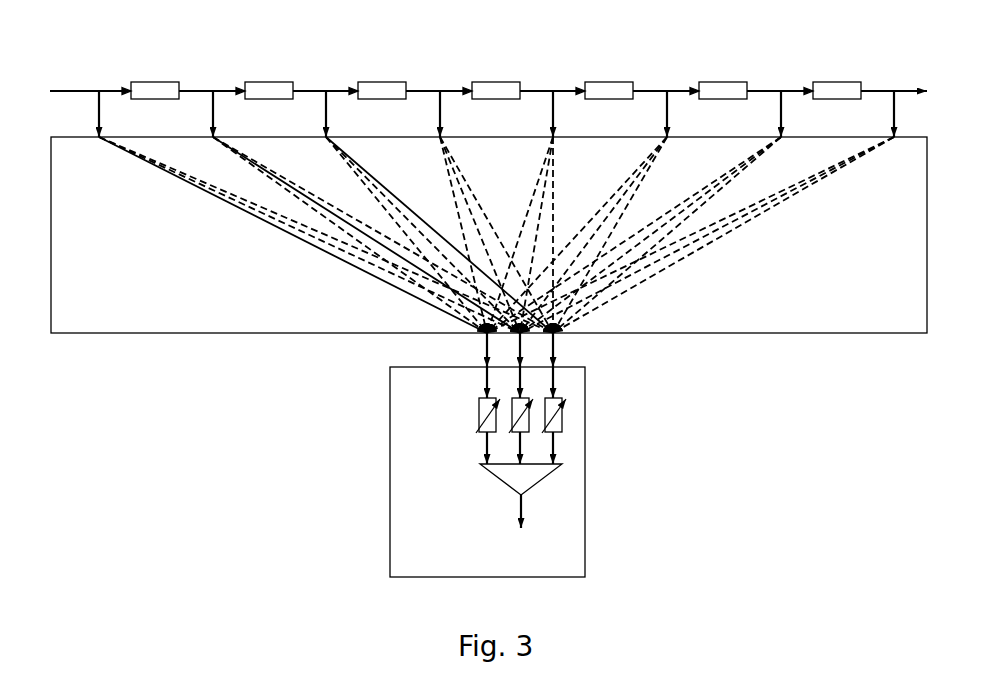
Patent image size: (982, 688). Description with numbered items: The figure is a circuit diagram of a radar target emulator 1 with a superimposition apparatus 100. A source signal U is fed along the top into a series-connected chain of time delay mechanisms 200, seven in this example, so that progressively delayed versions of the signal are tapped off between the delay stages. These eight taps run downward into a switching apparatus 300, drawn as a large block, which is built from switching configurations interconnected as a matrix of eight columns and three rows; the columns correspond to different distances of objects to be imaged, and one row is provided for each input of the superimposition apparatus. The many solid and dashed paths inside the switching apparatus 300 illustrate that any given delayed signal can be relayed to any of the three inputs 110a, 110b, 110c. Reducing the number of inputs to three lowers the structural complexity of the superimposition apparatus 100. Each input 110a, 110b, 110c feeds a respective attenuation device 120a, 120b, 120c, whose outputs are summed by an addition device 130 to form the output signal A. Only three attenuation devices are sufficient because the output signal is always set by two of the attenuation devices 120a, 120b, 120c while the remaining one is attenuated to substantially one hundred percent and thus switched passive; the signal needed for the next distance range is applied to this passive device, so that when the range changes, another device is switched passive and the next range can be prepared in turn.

The radar target emulator 1 is at (914, 36).
The time delay mechanism 200 is at (142, 82).
The switching apparatus 300 is at (857, 333).
The superimposition apparatus 100 is at (390, 558).
The first input 110a is at (485, 363).
The second input 110b is at (528, 364).
The third input 110c is at (557, 363).
The first attenuation device 120a is at (477, 433).
The second attenuation device 120b is at (530, 398).
The third attenuation device 120c is at (562, 432).
The addition device 130 is at (507, 485).